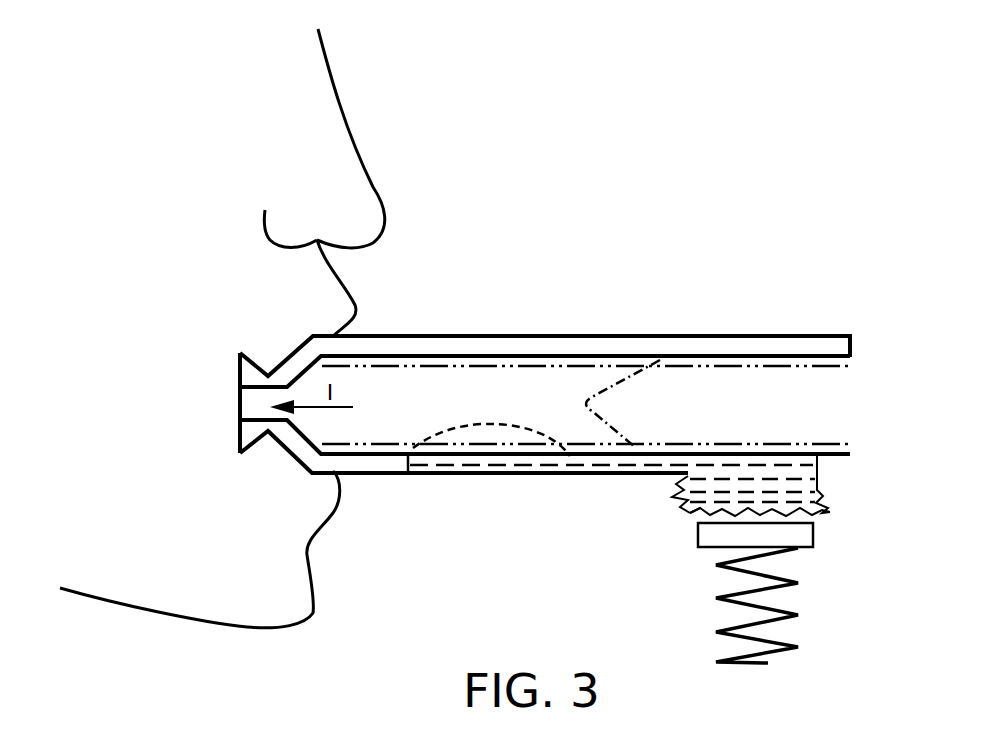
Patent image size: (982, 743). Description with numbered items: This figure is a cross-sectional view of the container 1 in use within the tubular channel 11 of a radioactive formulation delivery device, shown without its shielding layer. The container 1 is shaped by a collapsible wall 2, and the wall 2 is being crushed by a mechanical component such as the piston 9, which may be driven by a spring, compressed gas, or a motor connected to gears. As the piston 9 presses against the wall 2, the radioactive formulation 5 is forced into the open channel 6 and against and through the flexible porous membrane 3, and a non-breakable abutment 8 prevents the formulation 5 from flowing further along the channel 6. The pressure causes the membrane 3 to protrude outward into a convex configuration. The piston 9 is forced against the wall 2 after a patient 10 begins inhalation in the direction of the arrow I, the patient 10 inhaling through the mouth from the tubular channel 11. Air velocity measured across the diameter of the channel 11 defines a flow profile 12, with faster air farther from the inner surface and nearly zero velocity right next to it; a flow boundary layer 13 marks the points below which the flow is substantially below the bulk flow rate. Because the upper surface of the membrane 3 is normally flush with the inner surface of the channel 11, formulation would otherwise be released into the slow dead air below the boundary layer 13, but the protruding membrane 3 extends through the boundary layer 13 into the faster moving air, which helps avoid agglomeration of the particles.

The container 1 is at (833, 531).
The collapsible wall 2 is at (693, 518).
The flexible porous membrane 3 is at (500, 425).
The radioactive formulation 5 is at (795, 474).
The open channel 6 is at (584, 466).
The non-breakable abutment 8 is at (407, 471).
The piston 9 is at (702, 548).
The patient 10 is at (313, 613).
The tubular channel 11 is at (717, 337).
The flow profile 12 is at (598, 388).
The flow boundary layer 13 is at (360, 440).